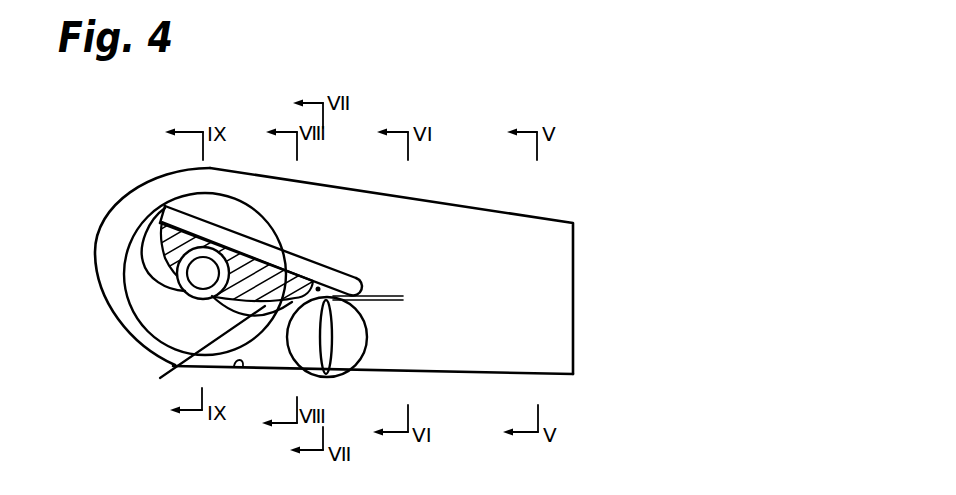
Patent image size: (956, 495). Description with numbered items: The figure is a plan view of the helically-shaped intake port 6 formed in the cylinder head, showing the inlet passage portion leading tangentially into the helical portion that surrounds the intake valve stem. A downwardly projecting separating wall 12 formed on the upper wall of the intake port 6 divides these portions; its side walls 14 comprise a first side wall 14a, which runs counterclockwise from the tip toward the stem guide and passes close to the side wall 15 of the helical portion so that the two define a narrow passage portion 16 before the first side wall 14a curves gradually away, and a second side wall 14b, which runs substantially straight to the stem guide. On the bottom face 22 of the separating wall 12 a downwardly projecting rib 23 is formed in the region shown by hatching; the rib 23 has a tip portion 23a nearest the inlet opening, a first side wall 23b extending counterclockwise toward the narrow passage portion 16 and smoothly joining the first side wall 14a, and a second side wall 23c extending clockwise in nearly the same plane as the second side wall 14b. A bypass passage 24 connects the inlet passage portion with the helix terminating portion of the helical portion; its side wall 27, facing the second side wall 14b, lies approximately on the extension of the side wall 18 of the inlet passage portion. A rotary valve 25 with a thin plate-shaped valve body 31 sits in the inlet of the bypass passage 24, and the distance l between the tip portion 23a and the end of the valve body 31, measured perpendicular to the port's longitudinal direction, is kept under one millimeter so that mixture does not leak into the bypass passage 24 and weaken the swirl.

The helically-shaped intake port 6 is at (317, 294).
The separating wall 12 is at (160, 207).
The lever 14 is at (253, 254).
The first side wall 14a is at (286, 250).
The second side wall 14b is at (245, 303).
The side wall of the helical portion 15 is at (100, 296).
The narrow passage portion 16 is at (166, 190).
The side wall of the inlet passage portion 18 is at (459, 368).
The bottom face of the separating wall 22 is at (322, 285).
The rib 23 is at (254, 280).
The tip portion of the rib 23a is at (350, 286).
The first side wall of the rib 23b is at (312, 285).
The second side wall of the rib 23c is at (188, 352).
The bypass passage 24 is at (271, 357).
The rotary valve 25 is at (340, 352).
The side wall of the bypass passage 27 is at (239, 367).
The valve body 31 is at (328, 333).
The distance l is at (395, 273).